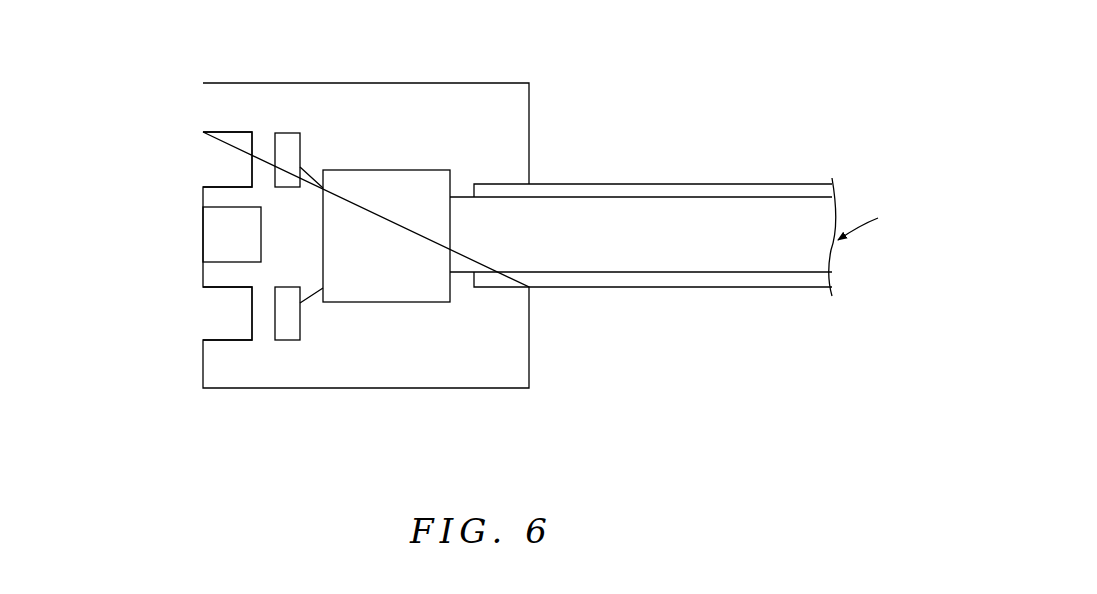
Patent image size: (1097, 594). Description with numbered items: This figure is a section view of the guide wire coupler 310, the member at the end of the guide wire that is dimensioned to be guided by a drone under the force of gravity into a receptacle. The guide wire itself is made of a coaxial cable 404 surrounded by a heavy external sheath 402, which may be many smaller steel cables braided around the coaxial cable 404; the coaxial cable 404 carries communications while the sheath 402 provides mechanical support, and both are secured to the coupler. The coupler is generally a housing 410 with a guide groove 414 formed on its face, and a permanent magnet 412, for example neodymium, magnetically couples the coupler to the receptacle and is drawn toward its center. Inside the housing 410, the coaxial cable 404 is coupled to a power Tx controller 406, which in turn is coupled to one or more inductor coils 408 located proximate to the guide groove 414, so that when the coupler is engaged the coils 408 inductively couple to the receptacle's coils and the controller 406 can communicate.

The guide wire coupler 310 is at (817, 110).
The housing 410 is at (375, 83).
The guide groove 414 is at (222, 167).
The permanent magnet 412 is at (212, 232).
The inductor coil 408 is at (295, 343).
The power Tx controller 406 is at (386, 236).
The external sheath 402 is at (630, 183).
The coaxial cable 404 is at (641, 234).